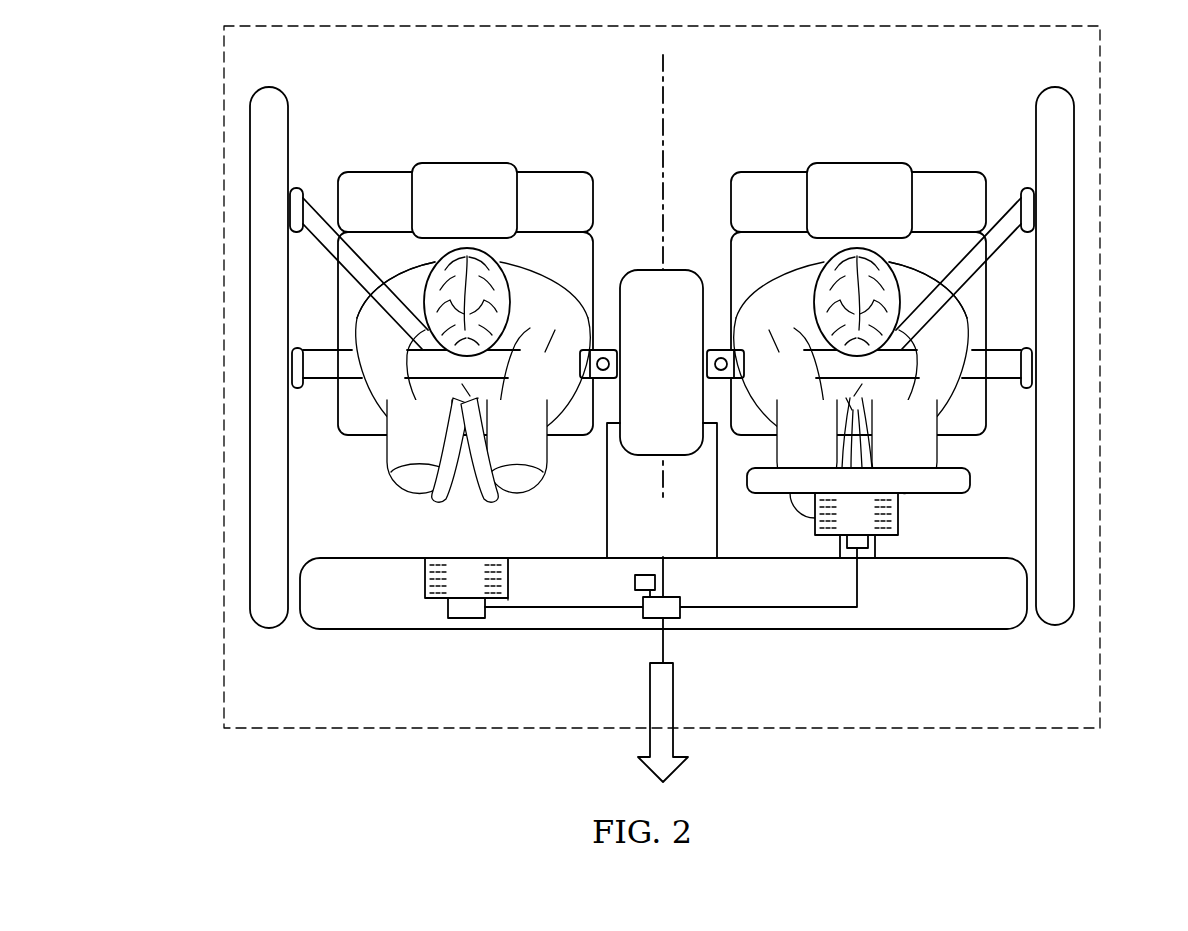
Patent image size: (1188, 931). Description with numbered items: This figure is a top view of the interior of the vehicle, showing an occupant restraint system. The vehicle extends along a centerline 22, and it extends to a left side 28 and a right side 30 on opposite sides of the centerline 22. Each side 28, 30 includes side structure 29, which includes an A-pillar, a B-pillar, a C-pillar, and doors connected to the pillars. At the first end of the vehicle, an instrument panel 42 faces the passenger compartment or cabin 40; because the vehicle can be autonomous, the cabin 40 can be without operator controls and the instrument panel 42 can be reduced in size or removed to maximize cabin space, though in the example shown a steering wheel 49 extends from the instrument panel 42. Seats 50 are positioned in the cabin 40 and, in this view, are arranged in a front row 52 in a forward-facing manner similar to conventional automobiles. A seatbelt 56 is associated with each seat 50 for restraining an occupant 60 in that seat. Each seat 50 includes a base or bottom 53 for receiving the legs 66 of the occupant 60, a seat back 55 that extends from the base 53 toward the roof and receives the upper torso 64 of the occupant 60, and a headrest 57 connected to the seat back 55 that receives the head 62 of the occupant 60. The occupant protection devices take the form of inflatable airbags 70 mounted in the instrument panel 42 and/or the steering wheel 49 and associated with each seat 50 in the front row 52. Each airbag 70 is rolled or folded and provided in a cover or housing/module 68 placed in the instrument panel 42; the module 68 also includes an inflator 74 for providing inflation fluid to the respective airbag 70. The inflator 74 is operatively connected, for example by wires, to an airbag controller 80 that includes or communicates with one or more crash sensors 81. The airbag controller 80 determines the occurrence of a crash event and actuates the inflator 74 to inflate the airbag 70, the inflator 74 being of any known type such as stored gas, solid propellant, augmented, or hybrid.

The centerline 22 is at (661, 78).
The left side 28 is at (1122, 140).
The side structure 29 is at (260, 238).
The right side 30 is at (188, 138).
The passenger compartment 40 is at (325, 682).
The instrument panel 42 is at (990, 620).
The steering wheel 49 is at (955, 482).
The seat 50 is at (595, 253).
The front row 52 is at (305, 398).
The seat base 53 is at (300, 348).
The seat back 55 is at (557, 183).
The seatbelt 56 is at (333, 240).
The headrest 57 is at (465, 172).
The occupant 60 is at (408, 278).
The head 62 is at (467, 262).
The upper torso 64 is at (520, 320).
The legs 66 is at (400, 462).
The module 68 is at (508, 598).
The airbag 70 is at (425, 582).
The inflator 74 is at (455, 618).
The airbag controller 80 is at (668, 620).
The crash sensor 81 is at (635, 582).